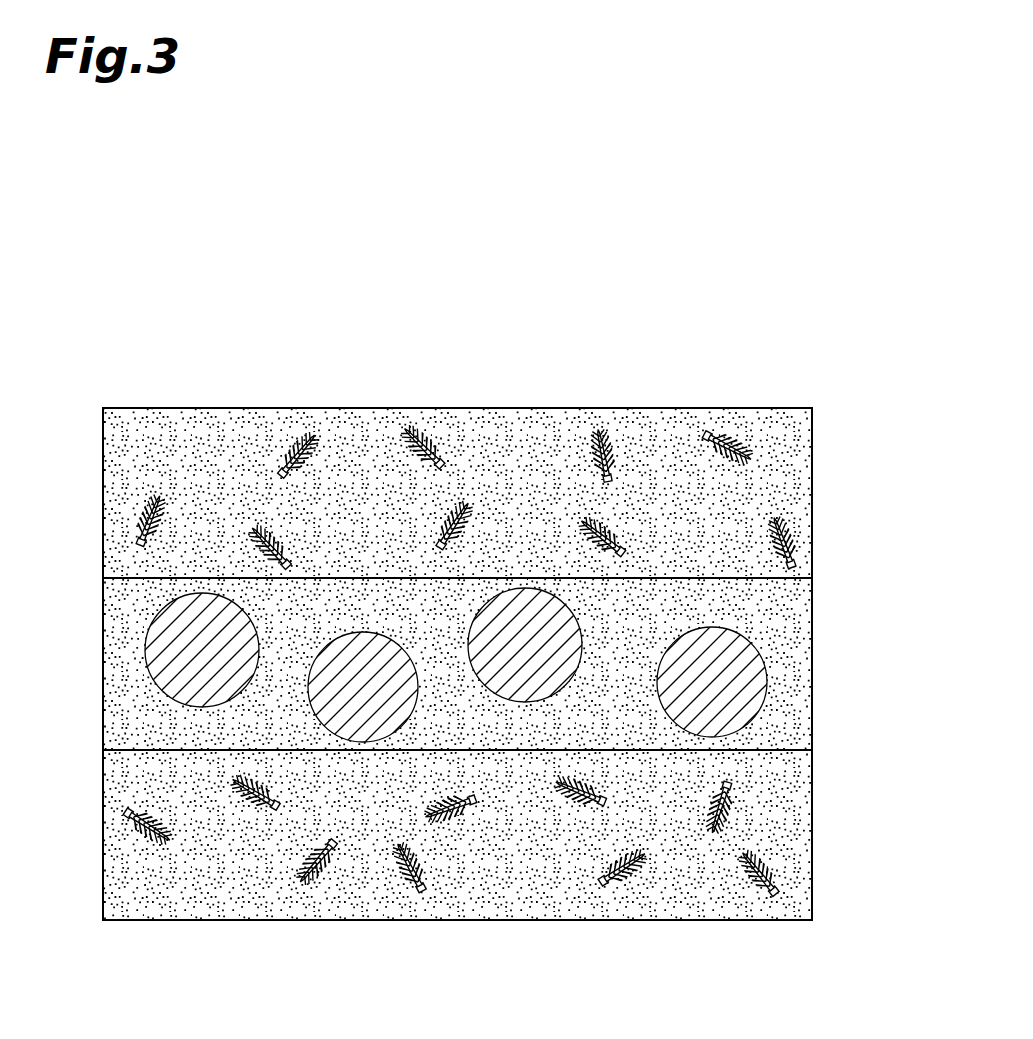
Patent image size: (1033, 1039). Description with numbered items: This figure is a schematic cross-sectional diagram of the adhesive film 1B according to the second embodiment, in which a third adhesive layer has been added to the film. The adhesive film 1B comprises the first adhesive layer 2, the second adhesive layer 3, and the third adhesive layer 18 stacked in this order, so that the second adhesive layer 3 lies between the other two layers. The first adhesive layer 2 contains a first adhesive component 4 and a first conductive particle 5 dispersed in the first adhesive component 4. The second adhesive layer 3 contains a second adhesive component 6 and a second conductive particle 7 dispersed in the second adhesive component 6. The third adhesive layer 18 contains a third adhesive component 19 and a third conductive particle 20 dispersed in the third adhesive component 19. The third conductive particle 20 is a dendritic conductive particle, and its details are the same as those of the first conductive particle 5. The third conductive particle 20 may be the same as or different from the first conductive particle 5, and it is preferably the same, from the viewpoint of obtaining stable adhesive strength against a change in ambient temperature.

The adhesive film 1B is at (750, 313).
The first adhesive layer 2 is at (503, 470).
The second adhesive layer 3 is at (486, 797).
The first adhesive component 4 is at (800, 488).
The first conductive particle 5 is at (140, 525).
The second adhesive component 6 is at (800, 642).
The second conductive particle 7 is at (202, 693).
The third adhesive layer 18 is at (518, 861).
The third adhesive component 19 is at (800, 830).
The third conductive particle 20 is at (140, 835).